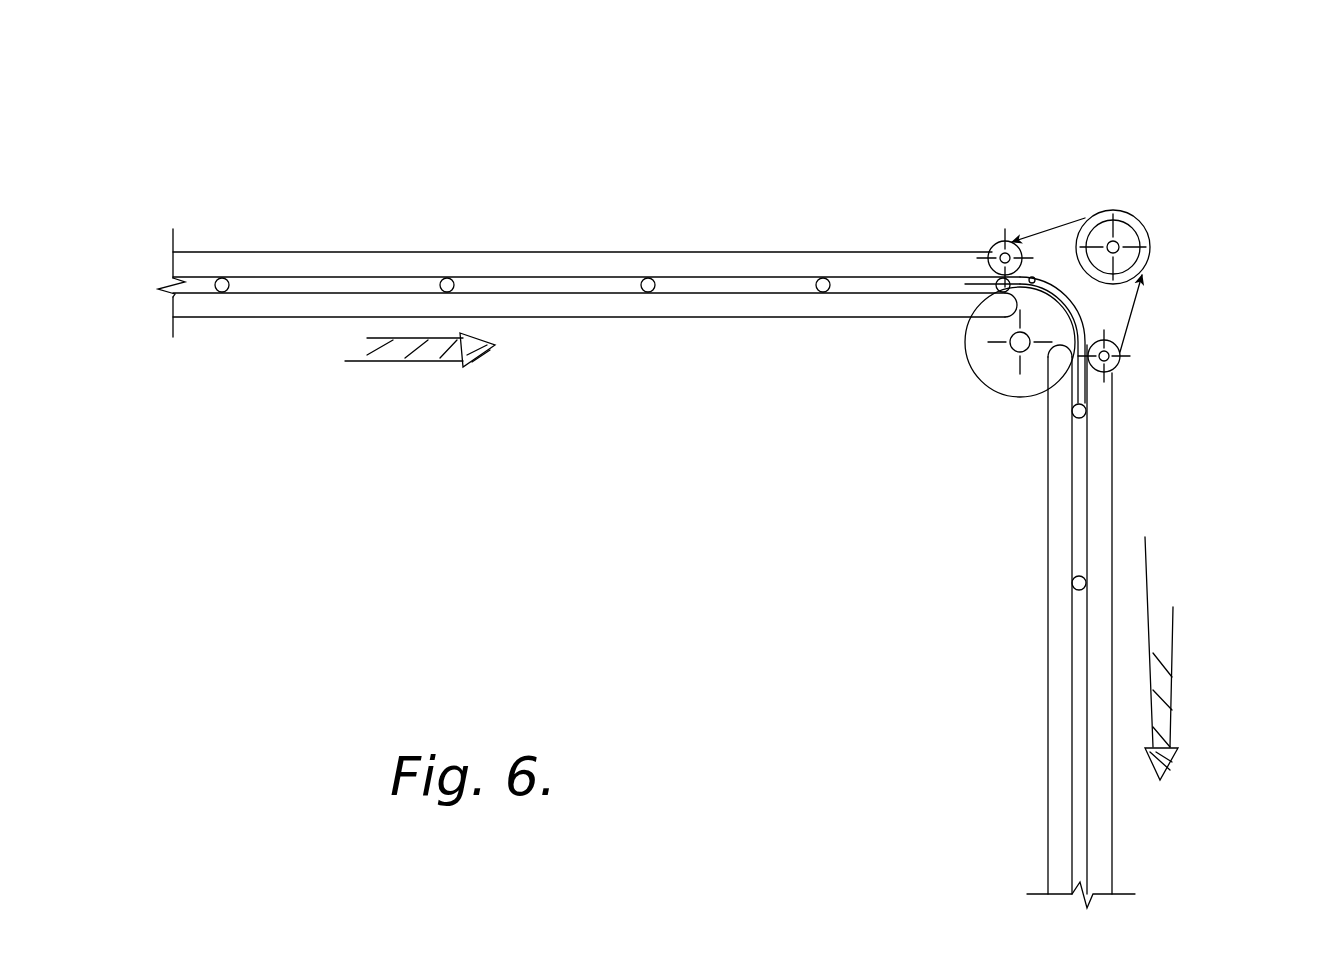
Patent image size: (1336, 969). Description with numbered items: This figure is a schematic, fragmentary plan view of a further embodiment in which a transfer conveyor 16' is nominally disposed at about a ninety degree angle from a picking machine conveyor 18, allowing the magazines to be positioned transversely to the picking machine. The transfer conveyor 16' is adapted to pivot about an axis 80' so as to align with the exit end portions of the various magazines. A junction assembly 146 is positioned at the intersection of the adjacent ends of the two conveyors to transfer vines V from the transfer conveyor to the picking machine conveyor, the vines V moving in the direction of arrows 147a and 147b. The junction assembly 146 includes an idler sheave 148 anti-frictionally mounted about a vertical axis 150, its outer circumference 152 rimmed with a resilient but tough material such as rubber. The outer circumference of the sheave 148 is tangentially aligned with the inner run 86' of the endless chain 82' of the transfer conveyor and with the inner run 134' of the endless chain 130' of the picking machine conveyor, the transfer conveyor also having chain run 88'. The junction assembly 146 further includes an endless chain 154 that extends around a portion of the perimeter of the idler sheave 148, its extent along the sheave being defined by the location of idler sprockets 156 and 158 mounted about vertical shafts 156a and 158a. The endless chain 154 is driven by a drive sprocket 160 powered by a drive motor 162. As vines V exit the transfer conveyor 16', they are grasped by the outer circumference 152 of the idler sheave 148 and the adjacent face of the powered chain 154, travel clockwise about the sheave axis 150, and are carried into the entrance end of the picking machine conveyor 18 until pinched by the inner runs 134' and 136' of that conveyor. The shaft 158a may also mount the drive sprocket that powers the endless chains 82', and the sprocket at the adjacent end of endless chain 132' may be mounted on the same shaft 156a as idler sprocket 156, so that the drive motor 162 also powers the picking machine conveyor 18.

The transfer conveyor 16' is at (441, 237).
The picking machine conveyor 18 is at (1236, 537).
The pivot axis 80' is at (943, 327).
The endless chain 82' is at (589, 282).
The inner run 86' is at (595, 347).
The belt rail 88' is at (596, 232).
The vines V is at (224, 278).
The endless chain 130' is at (998, 619).
The endless chain 132' is at (1170, 633).
The inner run 134' is at (999, 625).
The inner run 136' is at (1153, 619).
The junction assembly 146 is at (1227, 108).
The arrow 147a is at (400, 362).
The arrow 147b is at (1173, 658).
The idler sheave 148 is at (1020, 388).
The vertical axis 150 is at (1010, 345).
The outer circumference 152 is at (978, 388).
The endless chain 154 is at (1136, 307).
The idler sprocket 156 is at (1121, 354).
The vertical shaft 156a is at (1117, 366).
The idler sprocket 158 is at (994, 242).
The shaft 158a is at (1020, 240).
The drive sprocket 160 is at (1141, 238).
The drive motor 162 is at (1130, 212).